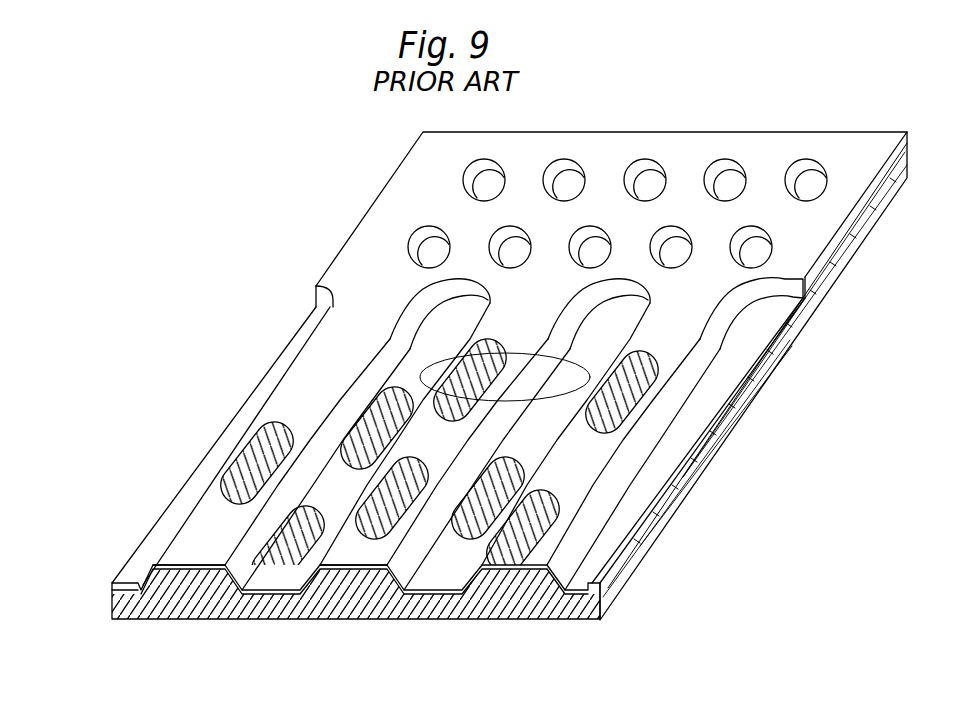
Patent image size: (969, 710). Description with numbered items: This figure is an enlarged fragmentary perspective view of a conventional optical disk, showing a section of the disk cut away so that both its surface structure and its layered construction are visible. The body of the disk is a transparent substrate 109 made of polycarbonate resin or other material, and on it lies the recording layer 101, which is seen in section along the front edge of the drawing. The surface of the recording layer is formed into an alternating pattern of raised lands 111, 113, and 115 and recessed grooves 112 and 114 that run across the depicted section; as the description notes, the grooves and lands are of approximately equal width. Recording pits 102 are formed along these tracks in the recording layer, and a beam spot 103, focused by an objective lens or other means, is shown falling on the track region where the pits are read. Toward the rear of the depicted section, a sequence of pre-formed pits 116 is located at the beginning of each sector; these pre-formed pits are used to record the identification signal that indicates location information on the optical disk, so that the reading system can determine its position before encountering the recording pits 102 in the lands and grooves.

The recording layer 101 is at (112, 586).
The recording pits 102 is at (247, 434).
The beam spot 103 is at (427, 370).
The transparent substrate 109 is at (638, 547).
The land 111 is at (194, 570).
The groove 112 is at (268, 574).
The land 113 is at (350, 570).
The groove 114 is at (431, 592).
The land 115 is at (511, 570).
The pre-formed pits 116 is at (418, 226).